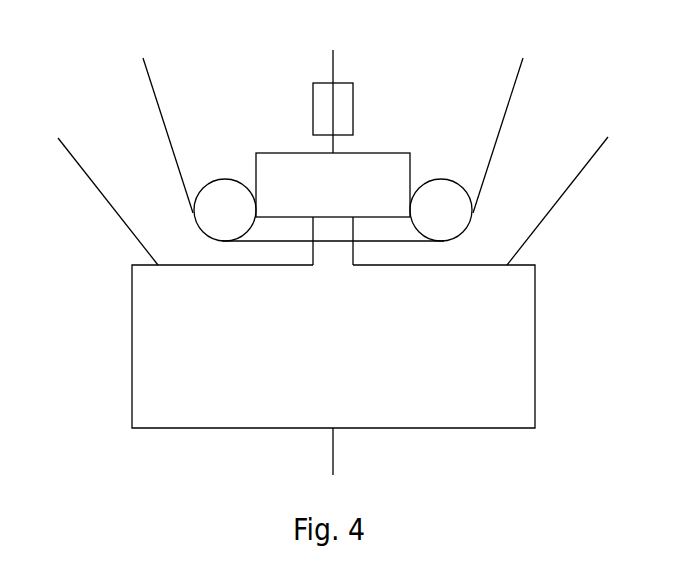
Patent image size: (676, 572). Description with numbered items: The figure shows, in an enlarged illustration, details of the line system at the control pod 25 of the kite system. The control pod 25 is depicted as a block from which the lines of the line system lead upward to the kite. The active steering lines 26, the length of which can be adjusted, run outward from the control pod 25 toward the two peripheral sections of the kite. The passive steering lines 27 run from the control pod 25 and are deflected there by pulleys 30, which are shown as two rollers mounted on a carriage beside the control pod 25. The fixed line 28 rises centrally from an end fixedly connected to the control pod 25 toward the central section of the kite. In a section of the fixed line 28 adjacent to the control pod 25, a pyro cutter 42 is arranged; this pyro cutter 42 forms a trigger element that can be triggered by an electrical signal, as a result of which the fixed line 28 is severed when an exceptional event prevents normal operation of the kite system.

The control pod 25 is at (537, 345).
The active steering lines 26 is at (108, 203).
The passive steering lines 27 is at (167, 140).
The fixed lines 28 is at (335, 68).
The pulleys 30 is at (220, 193).
The pyro cutter 42 is at (288, 58).